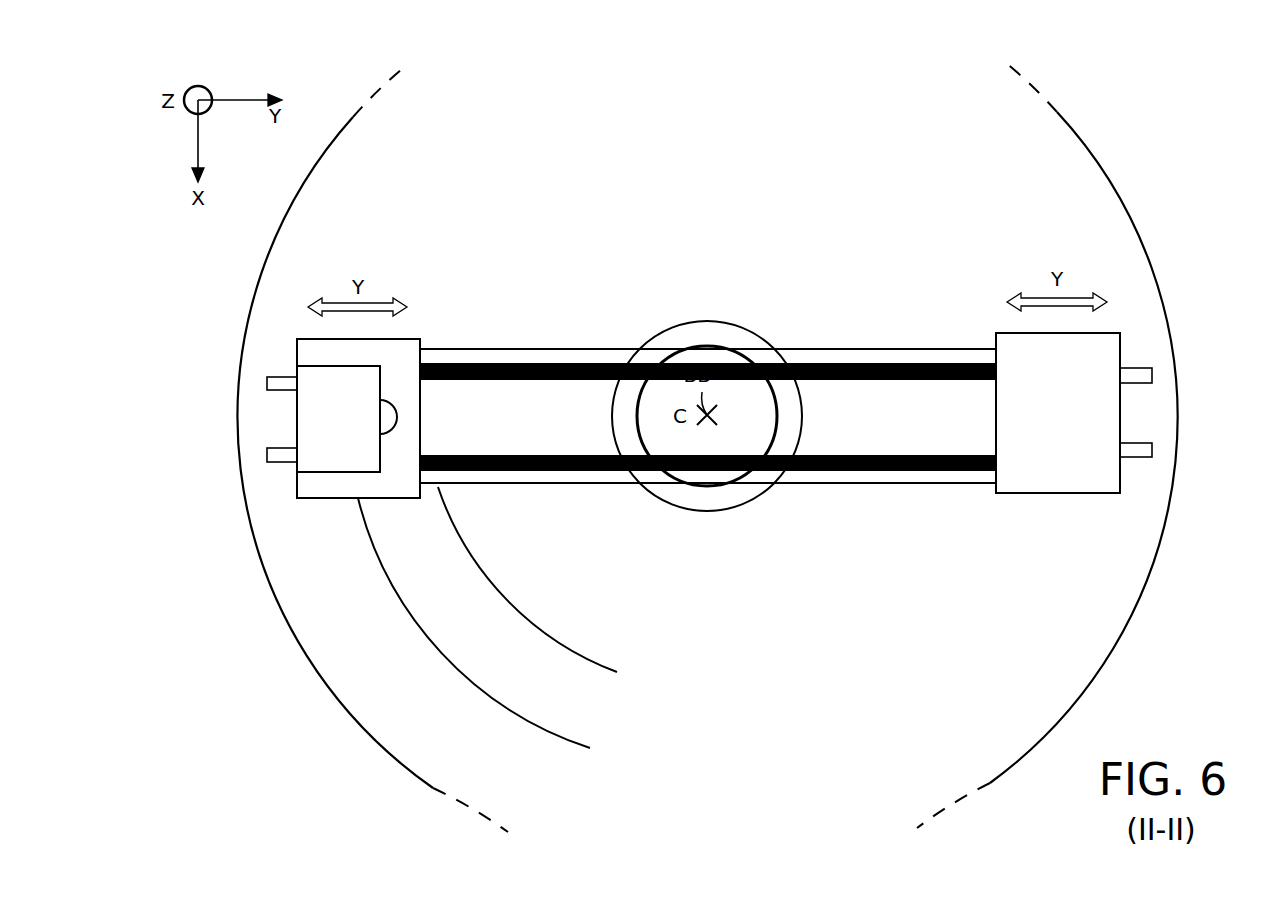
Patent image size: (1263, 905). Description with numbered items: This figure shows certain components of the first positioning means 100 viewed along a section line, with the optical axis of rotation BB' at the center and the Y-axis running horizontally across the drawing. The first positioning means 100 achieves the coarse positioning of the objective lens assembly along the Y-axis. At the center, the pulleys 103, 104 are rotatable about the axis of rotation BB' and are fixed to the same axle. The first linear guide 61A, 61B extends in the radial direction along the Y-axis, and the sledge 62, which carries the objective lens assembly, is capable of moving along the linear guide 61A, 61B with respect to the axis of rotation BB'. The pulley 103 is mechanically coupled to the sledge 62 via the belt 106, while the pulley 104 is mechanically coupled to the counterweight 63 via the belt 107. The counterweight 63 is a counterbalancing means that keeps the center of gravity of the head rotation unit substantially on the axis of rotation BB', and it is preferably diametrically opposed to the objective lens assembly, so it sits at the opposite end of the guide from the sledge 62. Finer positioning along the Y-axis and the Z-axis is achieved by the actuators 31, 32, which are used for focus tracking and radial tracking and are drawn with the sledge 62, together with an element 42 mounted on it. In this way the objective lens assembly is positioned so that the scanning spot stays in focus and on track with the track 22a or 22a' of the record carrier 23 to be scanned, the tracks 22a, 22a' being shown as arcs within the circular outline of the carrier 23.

The disk substrate 23 is at (1168, 197).
The actuator 31 is at (270, 403).
The actuator 32 is at (312, 366).
The bearing 42 is at (395, 417).
The sledge 62 is at (323, 498).
The counterweight 63 is at (1053, 493).
The belt 106 is at (502, 349).
The belt 107 is at (708, 423).
The first linear guide 61A is at (922, 360).
The first linear guide 61B is at (861, 471).
The first positioning means 100 is at (705, 522).
The pulley 103 is at (773, 416).
The pulley 104 is at (776, 417).
The track 22a is at (474, 628).
The track 22a' is at (527, 592).